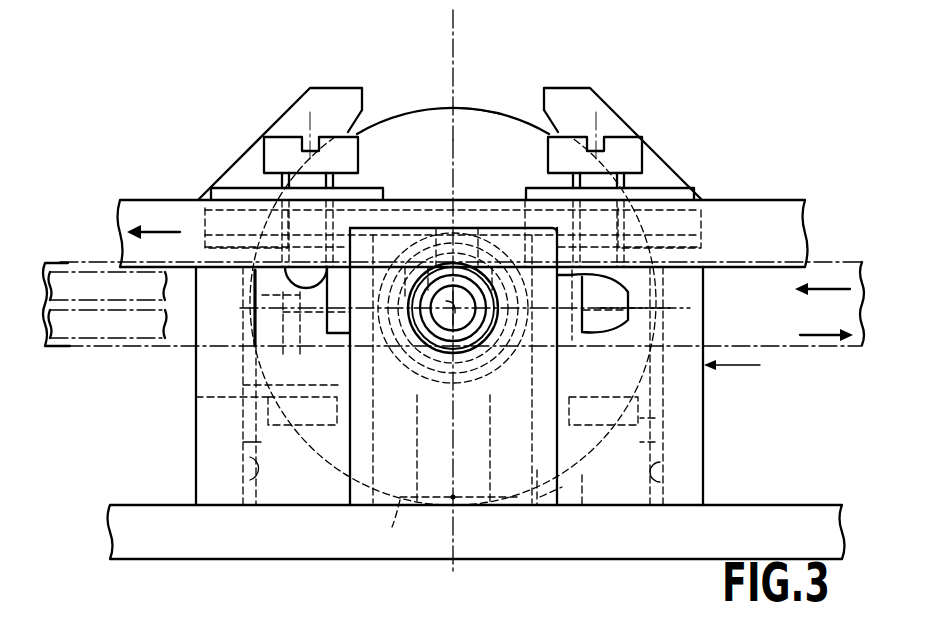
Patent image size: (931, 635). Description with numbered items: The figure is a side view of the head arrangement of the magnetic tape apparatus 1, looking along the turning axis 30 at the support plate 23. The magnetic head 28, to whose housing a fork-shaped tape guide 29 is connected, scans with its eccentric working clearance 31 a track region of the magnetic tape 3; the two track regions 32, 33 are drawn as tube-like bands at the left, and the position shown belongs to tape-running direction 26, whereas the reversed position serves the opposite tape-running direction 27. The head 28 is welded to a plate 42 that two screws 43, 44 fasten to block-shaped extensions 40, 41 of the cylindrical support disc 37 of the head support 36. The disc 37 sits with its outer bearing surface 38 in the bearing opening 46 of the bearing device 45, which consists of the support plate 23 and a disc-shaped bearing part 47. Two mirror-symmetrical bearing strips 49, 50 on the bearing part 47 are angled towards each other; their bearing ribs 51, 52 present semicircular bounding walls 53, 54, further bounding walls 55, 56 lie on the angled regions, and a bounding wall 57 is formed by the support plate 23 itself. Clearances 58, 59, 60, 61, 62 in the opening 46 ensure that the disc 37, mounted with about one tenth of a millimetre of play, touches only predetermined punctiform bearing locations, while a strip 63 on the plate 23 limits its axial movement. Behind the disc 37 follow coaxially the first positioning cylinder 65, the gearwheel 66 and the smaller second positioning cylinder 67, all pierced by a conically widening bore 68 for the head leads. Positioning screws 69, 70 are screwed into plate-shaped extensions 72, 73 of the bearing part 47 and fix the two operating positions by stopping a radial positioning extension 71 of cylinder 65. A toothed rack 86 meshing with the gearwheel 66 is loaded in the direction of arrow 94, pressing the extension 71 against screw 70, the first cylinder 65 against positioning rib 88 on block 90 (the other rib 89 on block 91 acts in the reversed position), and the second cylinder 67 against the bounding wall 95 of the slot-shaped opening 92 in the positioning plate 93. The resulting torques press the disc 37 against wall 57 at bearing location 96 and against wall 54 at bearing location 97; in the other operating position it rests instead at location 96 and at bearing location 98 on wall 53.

The magnetic tape apparatus 1 is at (125, 488).
The magnetic tape 3 is at (110, 346).
The support plate 23 is at (160, 547).
The tape-running direction 26 is at (822, 340).
The tape-running direction 27 is at (822, 286).
The magnetic head 28 is at (332, 338).
The fork-shaped tape guide 29 is at (605, 430).
The turning axis 30 is at (457, 268).
The working clearance 31 is at (463, 395).
The track region 32 is at (62, 338).
The track region 33 is at (70, 272).
The head support 36 is at (428, 109).
The support disc 37 is at (459, 130).
The bearing surface 38 is at (482, 112).
The block-shaped extension 40 is at (266, 296).
The block-shaped extension 41 is at (655, 397).
The plate 42 is at (300, 393).
The screw 43 is at (268, 398).
The screw 44 is at (655, 418).
The bearing device 45 is at (767, 378).
The bearing opening 46 is at (385, 118).
The bearing part 47 is at (582, 505).
The bearing strip 49 is at (245, 182).
The bearing strip 50 is at (660, 180).
The bearing rib 51 is at (243, 442).
The bearing rib 52 is at (655, 442).
The bounding wall 53 is at (250, 477).
The bounding wall 54 is at (660, 475).
The bounding wall 55 is at (355, 124).
The bounding wall 56 is at (549, 129).
The bounding wall 57 is at (537, 505).
The clearance 58 is at (242, 243).
The clearance 59 is at (266, 444).
The clearance 60 is at (648, 450).
The clearance 61 is at (665, 250).
The clearance 62 is at (548, 125).
The strip 63 is at (400, 500).
The first positioning cylinder 65 is at (436, 228).
The gearwheel 66 is at (478, 228).
The second positioning cylinder 67 is at (428, 267).
The bore 68 is at (492, 267).
The positioning screw 69 is at (283, 145).
The positioning screw 70 is at (623, 143).
The positioning extension 71 is at (630, 318).
The plate-shaped extension 72 is at (260, 193).
The plate-shaped extension 73 is at (640, 195).
The toothed rack 86 is at (763, 208).
The positioning rib 88 is at (393, 390).
The positioning rib 89 is at (500, 392).
The block 90 is at (345, 352).
The block 91 is at (537, 395).
The slot-shaped opening 92 is at (405, 267).
The positioning plate 93 is at (540, 497).
The arrow 94 is at (162, 212).
The bounding wall 95 is at (450, 353).
The bearing location 96 is at (455, 500).
The bearing location 97 is at (650, 309).
The bearing location 98 is at (250, 309).